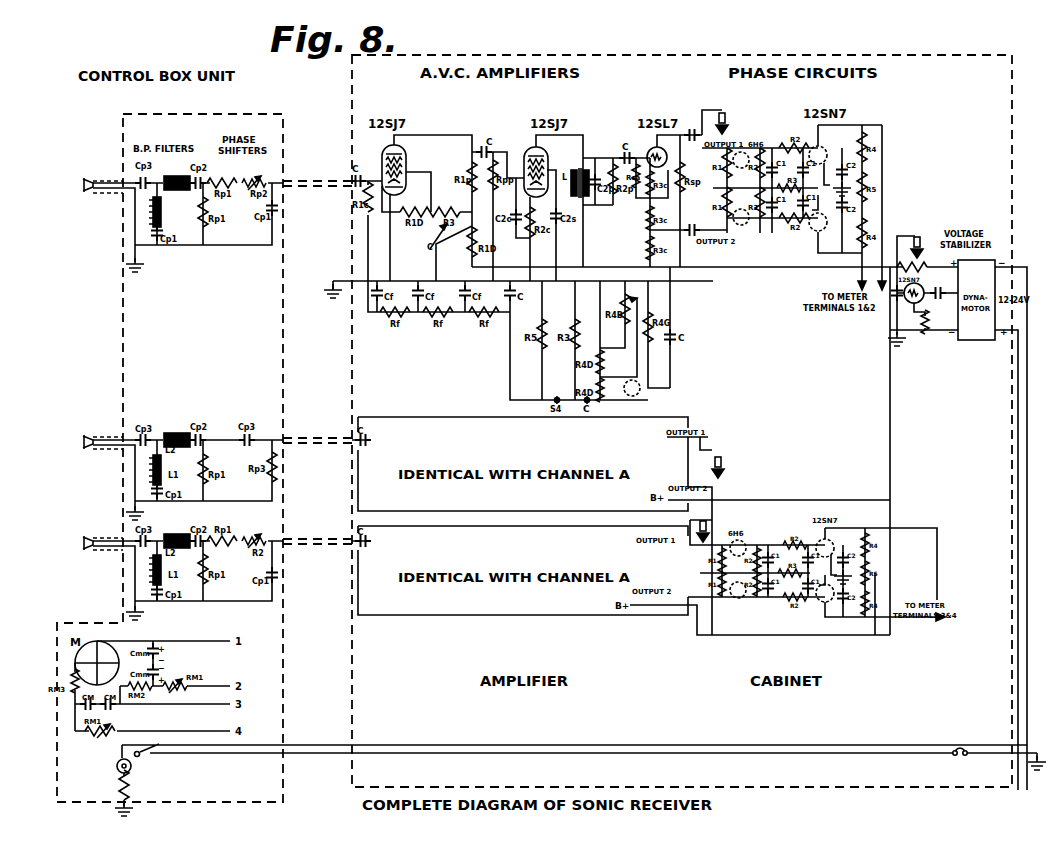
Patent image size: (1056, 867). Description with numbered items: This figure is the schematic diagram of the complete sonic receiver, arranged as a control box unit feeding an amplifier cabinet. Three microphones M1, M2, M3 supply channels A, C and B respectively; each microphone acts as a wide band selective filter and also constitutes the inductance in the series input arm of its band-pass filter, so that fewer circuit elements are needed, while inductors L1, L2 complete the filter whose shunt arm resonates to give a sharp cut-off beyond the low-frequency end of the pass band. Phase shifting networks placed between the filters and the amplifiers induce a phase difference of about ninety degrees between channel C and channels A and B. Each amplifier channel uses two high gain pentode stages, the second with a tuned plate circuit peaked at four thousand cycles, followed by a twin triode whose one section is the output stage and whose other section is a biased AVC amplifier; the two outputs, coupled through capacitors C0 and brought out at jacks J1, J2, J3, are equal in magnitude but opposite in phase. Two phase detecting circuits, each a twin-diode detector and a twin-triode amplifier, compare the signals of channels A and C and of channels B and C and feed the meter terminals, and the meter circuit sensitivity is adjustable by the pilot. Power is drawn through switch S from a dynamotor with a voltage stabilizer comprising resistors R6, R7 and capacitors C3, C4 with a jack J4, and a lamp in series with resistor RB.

The microphone M1 is at (87, 204).
The microphone M2 is at (87, 461).
The microphone M3 is at (87, 561).
The band-pass filter shunt inductor L1 is at (164, 212).
The band-pass filter series inductor L2 is at (177, 179).
The output coupling capacitor C0 is at (692, 179).
The output jack channel C J1 is at (722, 467).
The output jack channel A J2 is at (715, 116).
The output jack channel B J3 is at (701, 525).
The voltage stabilizer jack J4 is at (910, 246).
The voltage stabilizer series resistor R6 is at (912, 262).
The voltage stabilizer cathode resistor R7 is at (926, 318).
The voltage stabilizer input capacitor C3 is at (892, 295).
The voltage stabilizer output capacitor C4 is at (944, 289).
The lamp ballast resistor RB is at (118, 787).
The power switch S is at (579, 746).